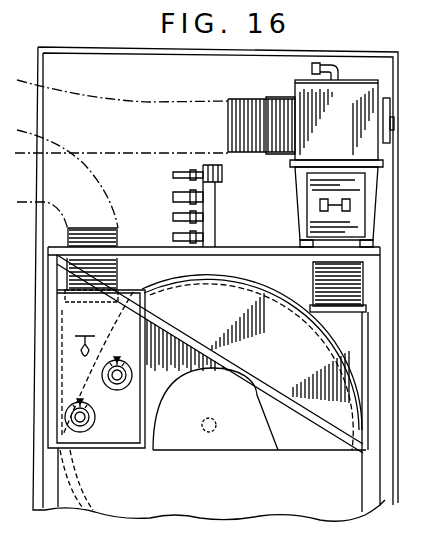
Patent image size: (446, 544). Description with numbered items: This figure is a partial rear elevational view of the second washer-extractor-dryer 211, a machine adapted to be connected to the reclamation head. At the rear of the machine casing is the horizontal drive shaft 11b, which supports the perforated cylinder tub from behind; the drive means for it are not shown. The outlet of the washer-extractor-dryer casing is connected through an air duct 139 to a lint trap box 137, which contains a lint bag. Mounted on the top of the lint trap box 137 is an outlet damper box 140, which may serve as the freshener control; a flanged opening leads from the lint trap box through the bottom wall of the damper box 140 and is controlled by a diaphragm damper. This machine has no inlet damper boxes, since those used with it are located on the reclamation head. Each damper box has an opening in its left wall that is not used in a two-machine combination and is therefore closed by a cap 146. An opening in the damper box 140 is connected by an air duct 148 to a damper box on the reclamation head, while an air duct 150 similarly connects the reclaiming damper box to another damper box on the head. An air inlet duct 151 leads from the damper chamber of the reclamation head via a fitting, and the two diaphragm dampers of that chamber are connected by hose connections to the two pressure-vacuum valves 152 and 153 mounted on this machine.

The air duct 148 is at (228, 126).
The air duct 150 is at (293, 99).
The outlet damper box 140 is at (366, 97).
The cap 146 is at (391, 137).
The pressure-vacuum valve 153 is at (222, 170).
The pressure-vacuum valve 152 is at (203, 215).
The air duct 151 is at (118, 247).
The lint trap box 137 is at (374, 212).
The air duct 139 is at (363, 284).
The horizontal drive shaft 11b is at (240, 447).
The second washer-extractor-dryer 211 is at (382, 520).